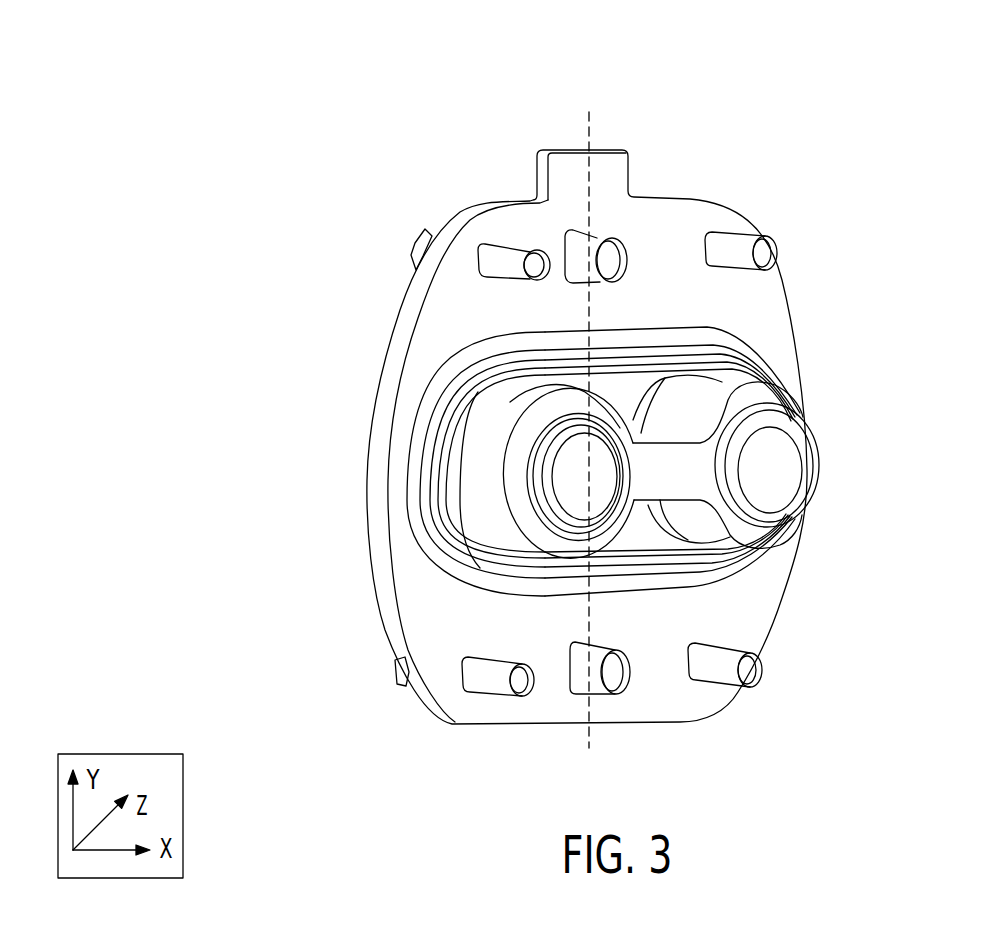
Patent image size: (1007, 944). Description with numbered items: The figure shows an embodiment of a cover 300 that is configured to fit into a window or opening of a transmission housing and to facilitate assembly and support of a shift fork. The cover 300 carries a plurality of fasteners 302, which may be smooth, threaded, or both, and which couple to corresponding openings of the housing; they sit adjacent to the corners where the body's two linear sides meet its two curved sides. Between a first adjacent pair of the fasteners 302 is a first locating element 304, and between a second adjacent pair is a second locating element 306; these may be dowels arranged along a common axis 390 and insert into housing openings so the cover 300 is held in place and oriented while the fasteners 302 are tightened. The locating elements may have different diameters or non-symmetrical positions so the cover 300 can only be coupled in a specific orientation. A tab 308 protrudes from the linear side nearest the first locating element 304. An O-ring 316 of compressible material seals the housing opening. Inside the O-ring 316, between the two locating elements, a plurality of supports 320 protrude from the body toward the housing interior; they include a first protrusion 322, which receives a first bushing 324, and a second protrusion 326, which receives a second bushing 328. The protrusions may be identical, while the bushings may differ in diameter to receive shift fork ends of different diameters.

The cover 300 is at (812, 98).
The plurality of fasteners 302 is at (786, 231).
The first locating element 304 is at (618, 237).
The second locating element 306 is at (618, 694).
The tab 308 is at (614, 148).
The O-ring 316 is at (402, 421).
The plurality of supports 320 is at (777, 577).
The first protrusion 322 is at (513, 400).
The first bushing 324 is at (550, 442).
The second protrusion 326 is at (715, 391).
The second bushing 328 is at (810, 428).
The common axis 390 is at (583, 732).